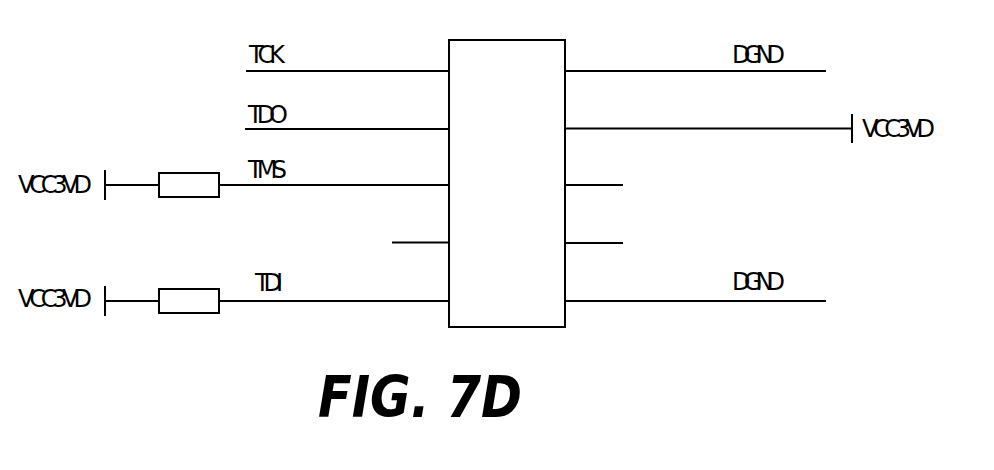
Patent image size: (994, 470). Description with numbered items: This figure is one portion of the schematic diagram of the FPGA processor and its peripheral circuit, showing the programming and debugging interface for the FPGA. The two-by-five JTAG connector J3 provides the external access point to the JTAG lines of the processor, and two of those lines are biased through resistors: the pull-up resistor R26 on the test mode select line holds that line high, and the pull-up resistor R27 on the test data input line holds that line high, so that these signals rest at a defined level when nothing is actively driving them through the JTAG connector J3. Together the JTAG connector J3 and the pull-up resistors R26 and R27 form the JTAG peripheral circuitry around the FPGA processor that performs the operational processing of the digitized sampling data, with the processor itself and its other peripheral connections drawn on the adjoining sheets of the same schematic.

The 2x5 JTAG connector J3 is at (507, 187).
The pull-up resistor on TMS R26 is at (189, 201).
The pull-up resistor on TDI R27 is at (189, 316).